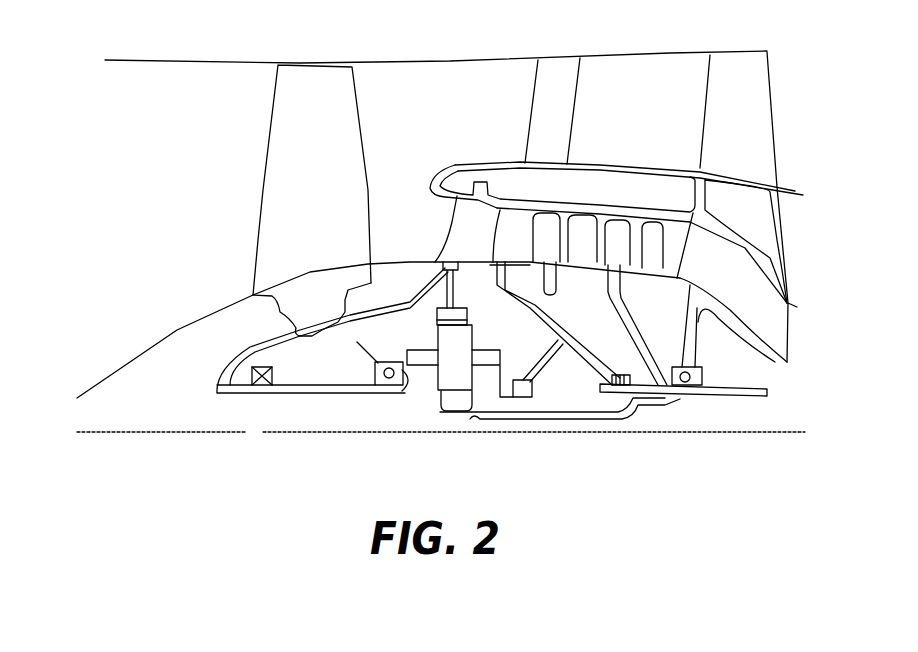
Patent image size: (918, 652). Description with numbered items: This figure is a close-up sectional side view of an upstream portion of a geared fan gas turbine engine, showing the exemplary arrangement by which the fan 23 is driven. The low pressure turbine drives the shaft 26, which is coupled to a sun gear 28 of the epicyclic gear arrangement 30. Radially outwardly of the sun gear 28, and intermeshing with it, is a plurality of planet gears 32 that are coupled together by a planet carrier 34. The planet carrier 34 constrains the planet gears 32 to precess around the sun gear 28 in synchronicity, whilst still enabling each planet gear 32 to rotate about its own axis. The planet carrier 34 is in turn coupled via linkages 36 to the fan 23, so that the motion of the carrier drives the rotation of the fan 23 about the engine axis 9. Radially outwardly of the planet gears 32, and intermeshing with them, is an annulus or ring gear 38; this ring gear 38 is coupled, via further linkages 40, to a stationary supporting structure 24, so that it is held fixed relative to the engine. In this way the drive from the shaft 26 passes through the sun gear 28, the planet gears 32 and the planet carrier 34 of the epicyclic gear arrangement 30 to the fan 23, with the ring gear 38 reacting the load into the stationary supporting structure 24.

The engine axis 9 is at (227, 432).
The fan 23 is at (285, 209).
The stationary supporting structure 24 is at (465, 228).
The shaft 26 is at (680, 402).
The sun gear 28 is at (450, 412).
The epicyclic gear arrangement 30 is at (413, 392).
The planet gears 32 is at (443, 375).
The planet carrier 34 is at (492, 386).
The linkages 36 is at (372, 394).
The ring gear 38 is at (440, 312).
The linkages 40 is at (455, 283).